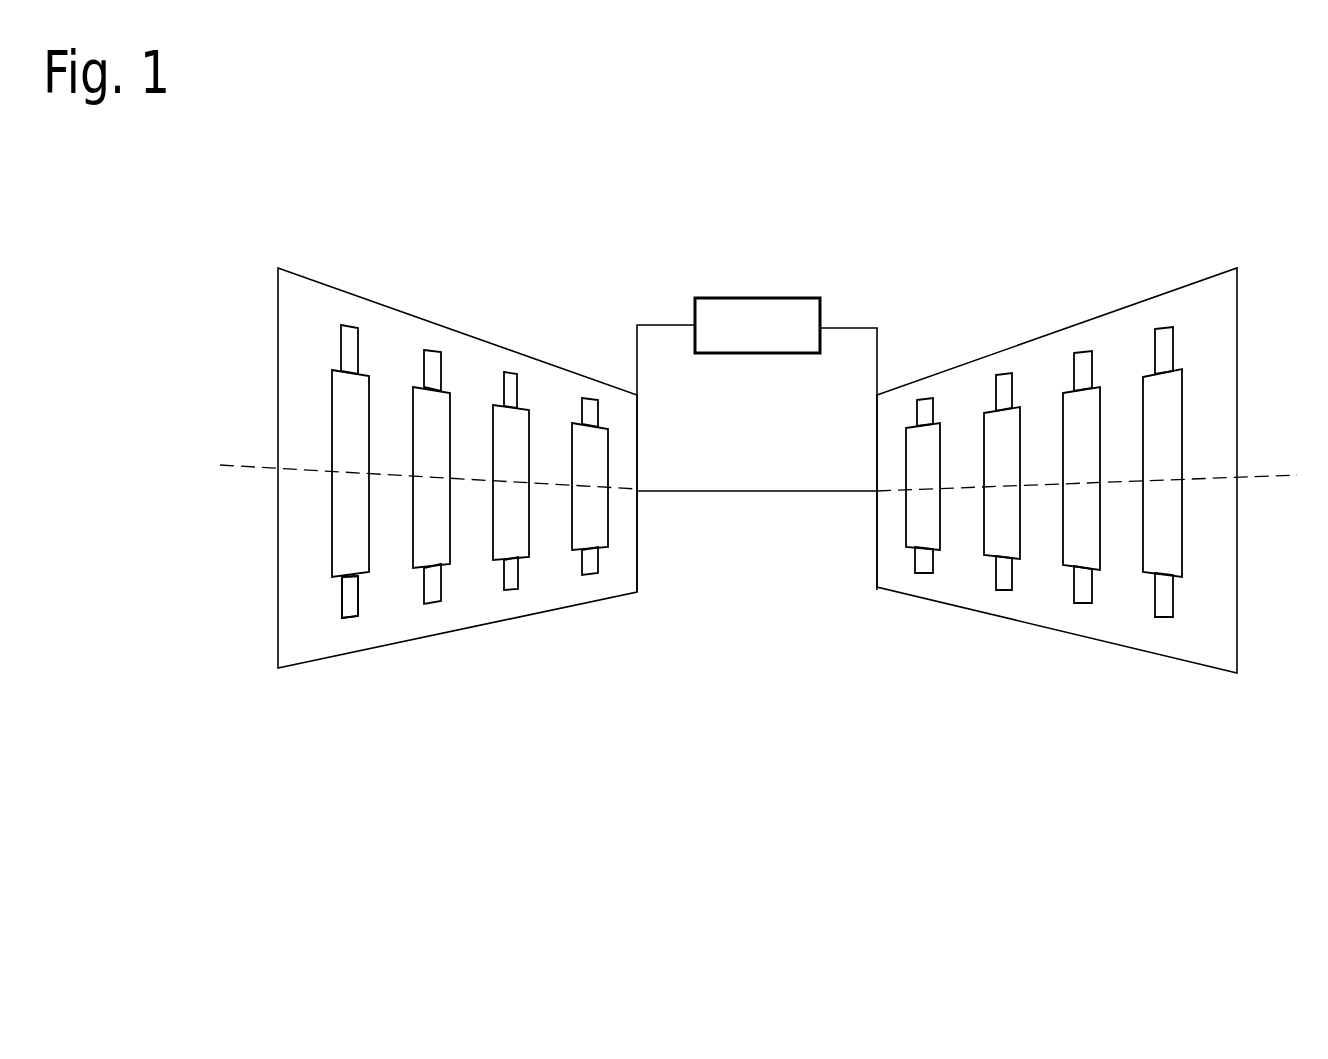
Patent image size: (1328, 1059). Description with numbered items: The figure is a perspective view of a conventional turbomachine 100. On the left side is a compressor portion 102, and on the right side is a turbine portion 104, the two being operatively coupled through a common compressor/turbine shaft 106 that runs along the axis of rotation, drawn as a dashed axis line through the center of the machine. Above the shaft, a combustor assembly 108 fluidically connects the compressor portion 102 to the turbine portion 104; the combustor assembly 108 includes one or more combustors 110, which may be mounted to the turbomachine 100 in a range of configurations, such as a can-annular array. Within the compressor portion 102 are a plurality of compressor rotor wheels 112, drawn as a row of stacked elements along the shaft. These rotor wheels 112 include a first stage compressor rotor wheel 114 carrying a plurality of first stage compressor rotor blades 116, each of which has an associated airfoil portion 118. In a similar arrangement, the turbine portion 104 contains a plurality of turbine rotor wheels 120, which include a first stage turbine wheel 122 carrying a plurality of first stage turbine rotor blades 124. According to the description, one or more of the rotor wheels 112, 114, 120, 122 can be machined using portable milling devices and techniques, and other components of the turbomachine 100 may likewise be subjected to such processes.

The turbomachine 100 is at (465, 228).
The compressor portion 102 is at (316, 674).
The turbine portion 104 is at (1146, 660).
The common compressor/turbine shaft 106 is at (698, 493).
The combustor assembly 108 is at (694, 265).
The combustor 110 is at (753, 299).
The compressor rotor wheels 112 is at (399, 614).
The first stage compressor rotor wheel 114 is at (332, 559).
The first stage compressor rotor blades 116 is at (337, 617).
The airfoil portion 118 is at (350, 608).
The turbine rotor wheels 120 is at (1186, 606).
The first stage turbine wheel 122 is at (937, 552).
The first stage turbine rotor blades 124 is at (923, 398).